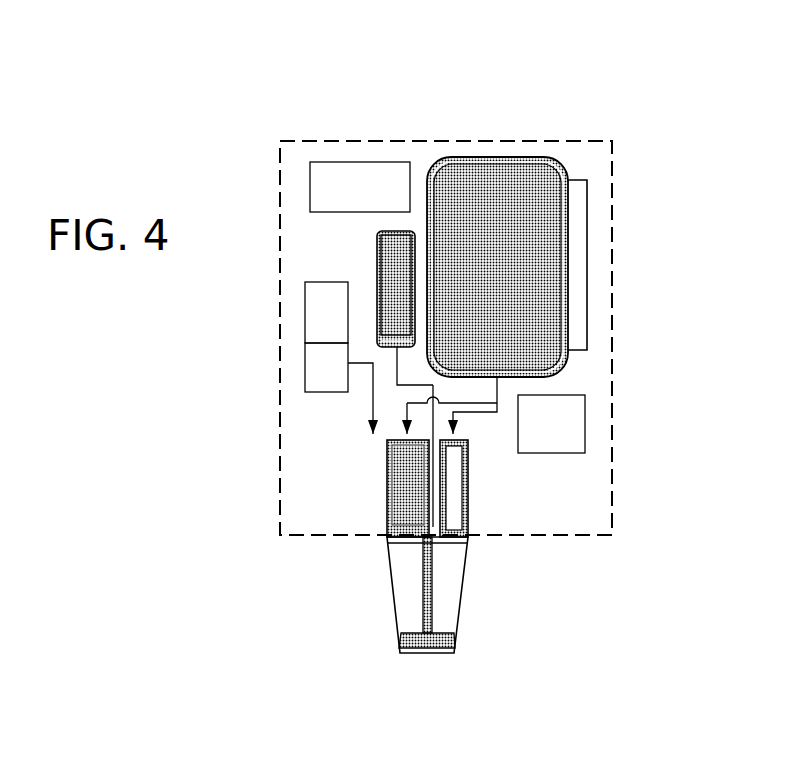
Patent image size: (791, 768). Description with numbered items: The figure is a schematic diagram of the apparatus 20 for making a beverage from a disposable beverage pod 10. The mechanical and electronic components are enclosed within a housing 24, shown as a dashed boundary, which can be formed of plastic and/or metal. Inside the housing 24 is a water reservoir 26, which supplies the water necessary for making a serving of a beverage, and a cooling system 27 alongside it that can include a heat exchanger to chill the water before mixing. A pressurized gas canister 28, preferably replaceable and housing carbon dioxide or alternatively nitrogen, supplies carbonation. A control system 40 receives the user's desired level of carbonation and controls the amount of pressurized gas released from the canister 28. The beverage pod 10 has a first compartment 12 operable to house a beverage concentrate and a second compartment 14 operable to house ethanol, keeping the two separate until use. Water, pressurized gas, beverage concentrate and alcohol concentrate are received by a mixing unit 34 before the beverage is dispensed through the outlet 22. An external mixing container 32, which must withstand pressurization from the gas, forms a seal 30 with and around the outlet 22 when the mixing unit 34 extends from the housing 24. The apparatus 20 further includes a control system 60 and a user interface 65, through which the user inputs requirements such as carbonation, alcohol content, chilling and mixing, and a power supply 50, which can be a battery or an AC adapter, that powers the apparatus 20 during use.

The disposable beverage pod 10 is at (385, 460).
The first compartment 12 is at (378, 495).
The second compartment 14 is at (465, 497).
The apparatus 20 is at (323, 140).
The outlet 22 is at (423, 520).
The housing 24 is at (578, 140).
The water reservoir 26 is at (508, 285).
The cooling system 27 is at (575, 307).
The pressurized gas canister 28 is at (372, 264).
The seal 30 is at (388, 540).
The external mixing container 32 is at (445, 602).
The mixing unit 34 is at (433, 562).
The control system 40 is at (383, 176).
The power supply 50 is at (568, 425).
The control system 60 is at (317, 303).
The user interface 65 is at (317, 363).